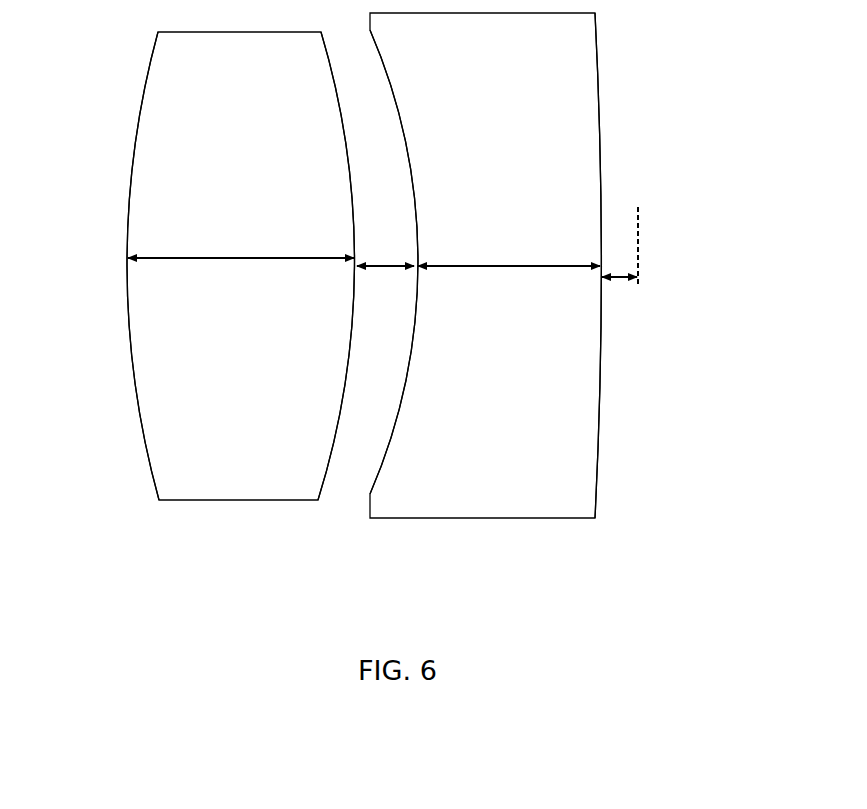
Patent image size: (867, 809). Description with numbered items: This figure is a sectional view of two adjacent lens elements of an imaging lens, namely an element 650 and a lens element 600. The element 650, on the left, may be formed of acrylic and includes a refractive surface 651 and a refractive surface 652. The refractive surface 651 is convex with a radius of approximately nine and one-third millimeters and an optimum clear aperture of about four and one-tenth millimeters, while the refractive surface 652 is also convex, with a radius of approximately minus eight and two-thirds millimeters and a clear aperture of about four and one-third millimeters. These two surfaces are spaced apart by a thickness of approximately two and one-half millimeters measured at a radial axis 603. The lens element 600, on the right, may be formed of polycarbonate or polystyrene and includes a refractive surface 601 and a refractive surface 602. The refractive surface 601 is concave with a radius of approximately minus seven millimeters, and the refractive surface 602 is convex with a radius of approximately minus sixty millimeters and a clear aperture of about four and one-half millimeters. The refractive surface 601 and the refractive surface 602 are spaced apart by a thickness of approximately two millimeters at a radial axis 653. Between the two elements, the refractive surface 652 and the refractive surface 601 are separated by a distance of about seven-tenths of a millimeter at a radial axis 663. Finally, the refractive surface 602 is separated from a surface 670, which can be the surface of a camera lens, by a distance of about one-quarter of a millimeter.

The lens element 600 is at (582, 160).
The refractive surface 601 is at (412, 160).
The refractive surface 602 is at (599, 104).
The radial axis 603 is at (225, 250).
The element 650 is at (168, 213).
The refractive surface 651 is at (130, 413).
The refractive surface 652 is at (337, 378).
The radial axis 653 is at (509, 281).
The radial axis 663 is at (385, 247).
The surface 670 is at (638, 212).